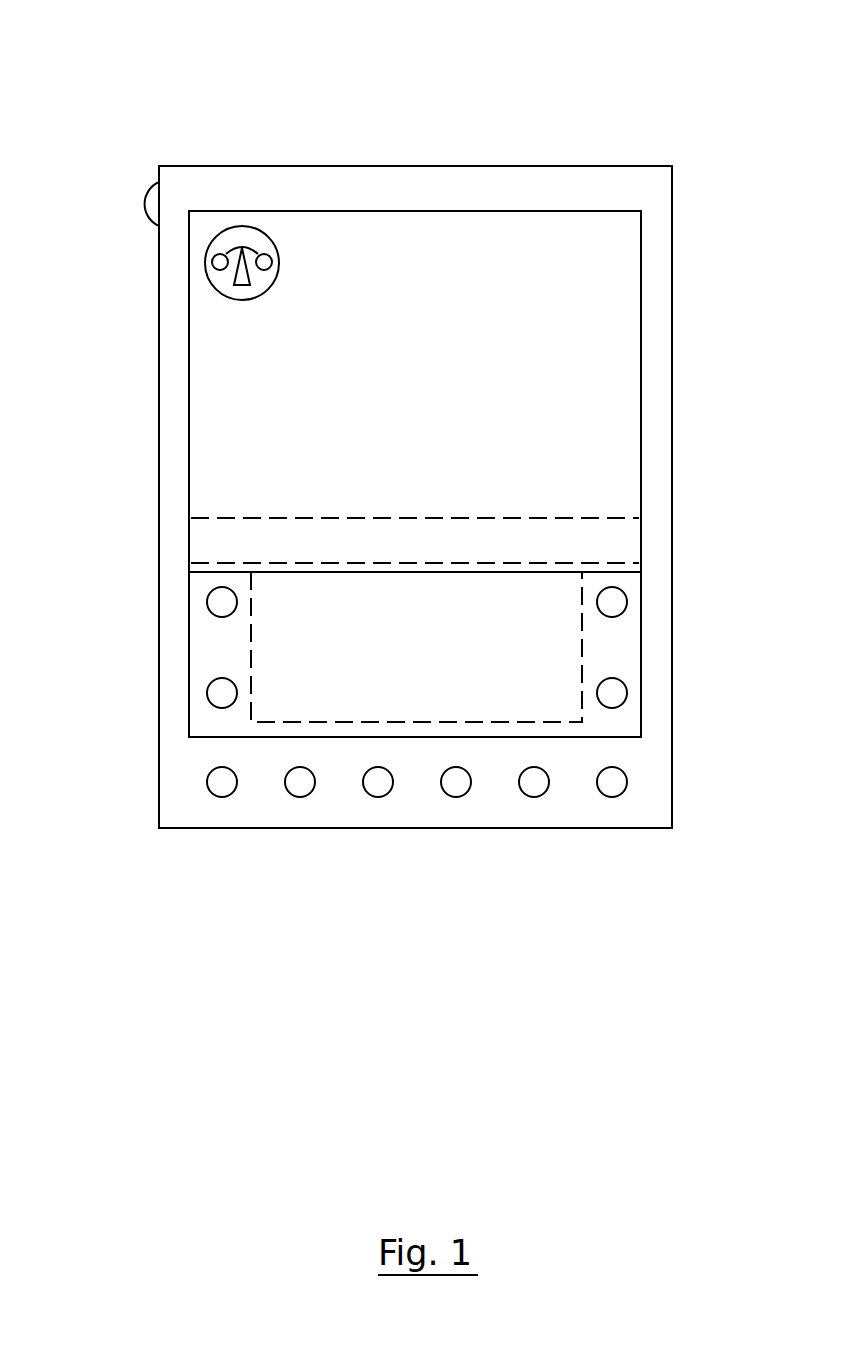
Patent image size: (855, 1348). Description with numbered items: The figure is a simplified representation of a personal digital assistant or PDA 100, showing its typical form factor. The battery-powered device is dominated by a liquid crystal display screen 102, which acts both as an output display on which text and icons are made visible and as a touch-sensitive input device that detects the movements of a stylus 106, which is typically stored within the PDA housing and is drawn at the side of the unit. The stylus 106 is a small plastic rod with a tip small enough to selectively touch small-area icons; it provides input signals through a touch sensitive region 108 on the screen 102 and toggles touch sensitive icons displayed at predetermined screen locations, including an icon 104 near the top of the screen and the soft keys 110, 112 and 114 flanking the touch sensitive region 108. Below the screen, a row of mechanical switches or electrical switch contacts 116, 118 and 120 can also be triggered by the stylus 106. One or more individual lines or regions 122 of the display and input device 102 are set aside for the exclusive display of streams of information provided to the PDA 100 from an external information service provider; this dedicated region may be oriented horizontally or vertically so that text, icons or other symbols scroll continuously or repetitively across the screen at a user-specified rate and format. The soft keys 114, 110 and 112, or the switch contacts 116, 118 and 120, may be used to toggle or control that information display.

The personal digital assistant 100 is at (88, 31).
The liquid crystal display screen 102 is at (510, 255).
The touch sensitive icon 104 is at (242, 226).
The stylus 106 is at (147, 187).
The touch sensitive region 108 is at (282, 647).
The touch sensitive icon 110 is at (627, 601).
The touch sensitive icon 112 is at (627, 692).
The touch sensitive icons 114 is at (207, 601).
The mechanical switch 116 is at (225, 797).
The mechanical switches 118 is at (452, 795).
The mechanical switches 120 is at (534, 797).
The lines or regions of the display 122 is at (207, 543).